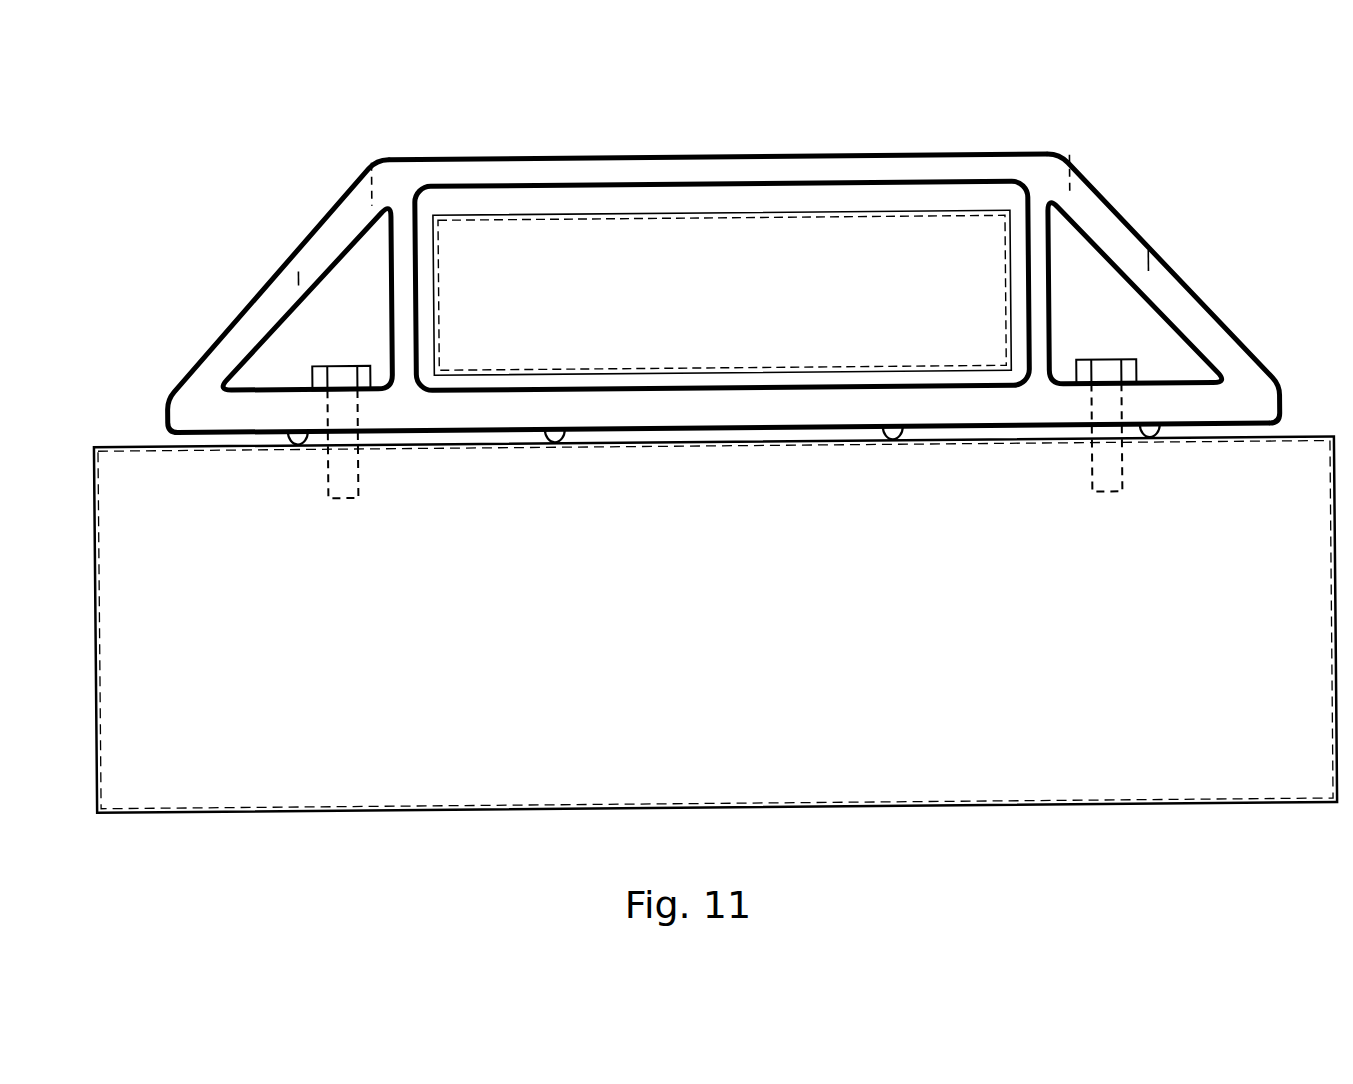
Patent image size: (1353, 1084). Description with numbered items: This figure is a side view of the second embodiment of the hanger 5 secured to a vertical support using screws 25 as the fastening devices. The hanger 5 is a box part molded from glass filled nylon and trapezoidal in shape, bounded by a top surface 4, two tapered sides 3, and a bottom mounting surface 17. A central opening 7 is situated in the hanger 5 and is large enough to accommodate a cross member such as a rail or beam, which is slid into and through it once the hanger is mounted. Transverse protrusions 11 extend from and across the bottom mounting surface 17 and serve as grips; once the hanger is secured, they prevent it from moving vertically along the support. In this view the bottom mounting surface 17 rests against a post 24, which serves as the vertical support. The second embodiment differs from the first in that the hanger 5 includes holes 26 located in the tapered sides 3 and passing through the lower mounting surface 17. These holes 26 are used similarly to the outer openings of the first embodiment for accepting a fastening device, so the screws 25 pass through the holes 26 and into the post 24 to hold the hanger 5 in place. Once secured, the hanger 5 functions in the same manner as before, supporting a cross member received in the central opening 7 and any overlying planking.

The tapered sides 3 is at (245, 318).
The top surface 4 is at (542, 170).
The hanger 5 is at (1036, 178).
The central opening 7 is at (688, 258).
The transverse protrusions 11 is at (298, 448).
The bottom mounting surface 17 is at (720, 432).
The post 24 is at (330, 775).
The screws 25 is at (338, 362).
The holes 26 is at (335, 225).